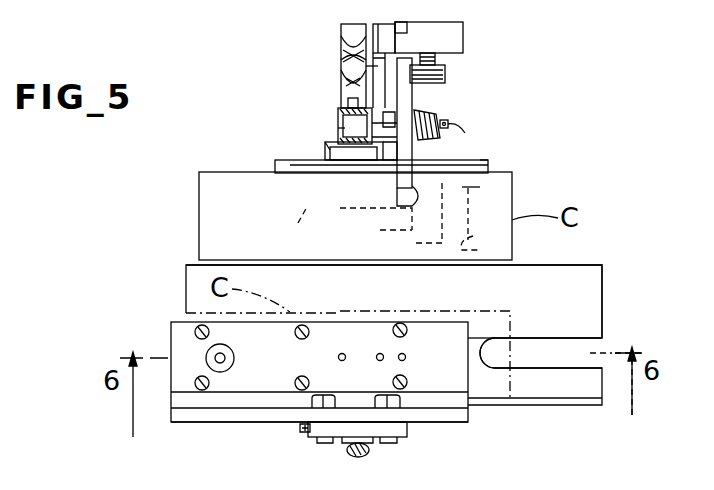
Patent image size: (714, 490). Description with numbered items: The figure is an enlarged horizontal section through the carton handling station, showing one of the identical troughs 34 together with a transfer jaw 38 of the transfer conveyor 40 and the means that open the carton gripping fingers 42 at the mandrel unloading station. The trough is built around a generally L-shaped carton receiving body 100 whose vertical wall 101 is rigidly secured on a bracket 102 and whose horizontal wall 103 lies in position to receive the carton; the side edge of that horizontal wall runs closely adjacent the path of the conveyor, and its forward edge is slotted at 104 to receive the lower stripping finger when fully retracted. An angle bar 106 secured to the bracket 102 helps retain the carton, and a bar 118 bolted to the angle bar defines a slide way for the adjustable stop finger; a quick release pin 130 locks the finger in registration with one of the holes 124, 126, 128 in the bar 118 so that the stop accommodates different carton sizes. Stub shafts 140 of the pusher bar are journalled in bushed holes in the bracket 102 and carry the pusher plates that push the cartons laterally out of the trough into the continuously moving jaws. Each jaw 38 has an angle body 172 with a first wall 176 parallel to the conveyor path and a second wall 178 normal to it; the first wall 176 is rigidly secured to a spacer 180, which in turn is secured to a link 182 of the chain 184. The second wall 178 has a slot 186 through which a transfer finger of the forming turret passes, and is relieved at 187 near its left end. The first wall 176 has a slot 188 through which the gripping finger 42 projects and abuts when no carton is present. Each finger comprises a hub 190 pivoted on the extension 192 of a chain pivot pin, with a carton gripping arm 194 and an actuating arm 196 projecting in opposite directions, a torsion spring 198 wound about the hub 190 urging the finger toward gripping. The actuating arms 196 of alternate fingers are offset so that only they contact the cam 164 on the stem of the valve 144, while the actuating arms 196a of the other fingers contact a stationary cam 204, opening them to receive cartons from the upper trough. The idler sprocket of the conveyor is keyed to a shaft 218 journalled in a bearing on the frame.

The trough 34 is at (598, 298).
The transfer jaw 38 is at (488, 164).
The transfer conveyor 40 is at (336, 128).
The carton gripping finger 42 is at (480, 187).
The carton receiving body 100 is at (577, 307).
The vertical wall 101 is at (588, 405).
The bracket 102 is at (307, 428).
The horizontal wall 103 is at (477, 297).
The slot 104 is at (578, 340).
The angle bar 106 is at (203, 416).
The bar 118 is at (290, 380).
The hole 124 is at (338, 355).
The hole 126 is at (381, 352).
The hole 128 is at (405, 354).
The quick release pin 130 is at (212, 353).
The stub shaft 140 is at (347, 450).
The valve 144 is at (464, 31).
The combination gate opening and valve actuating cam 164 is at (445, 68).
The angle body 172 is at (488, 168).
The first wall 176 is at (275, 165).
The second wall 178 is at (409, 221).
The spacer 180 is at (330, 150).
The link 182 is at (355, 144).
The chain 184 is at (338, 114).
The slot 186 is at (506, 246).
The relief 187 is at (291, 230).
The slot 188 is at (392, 162).
The hub 190 is at (440, 100).
The extension 192 is at (452, 128).
The carton gripping arm 194 is at (407, 201).
The actuating arm 196 is at (413, 90).
The actuating arm 196a is at (378, 66).
The torsion spring 198 is at (465, 133).
The stationary cam 204 is at (378, 58).
The shaft 218 is at (340, 32).